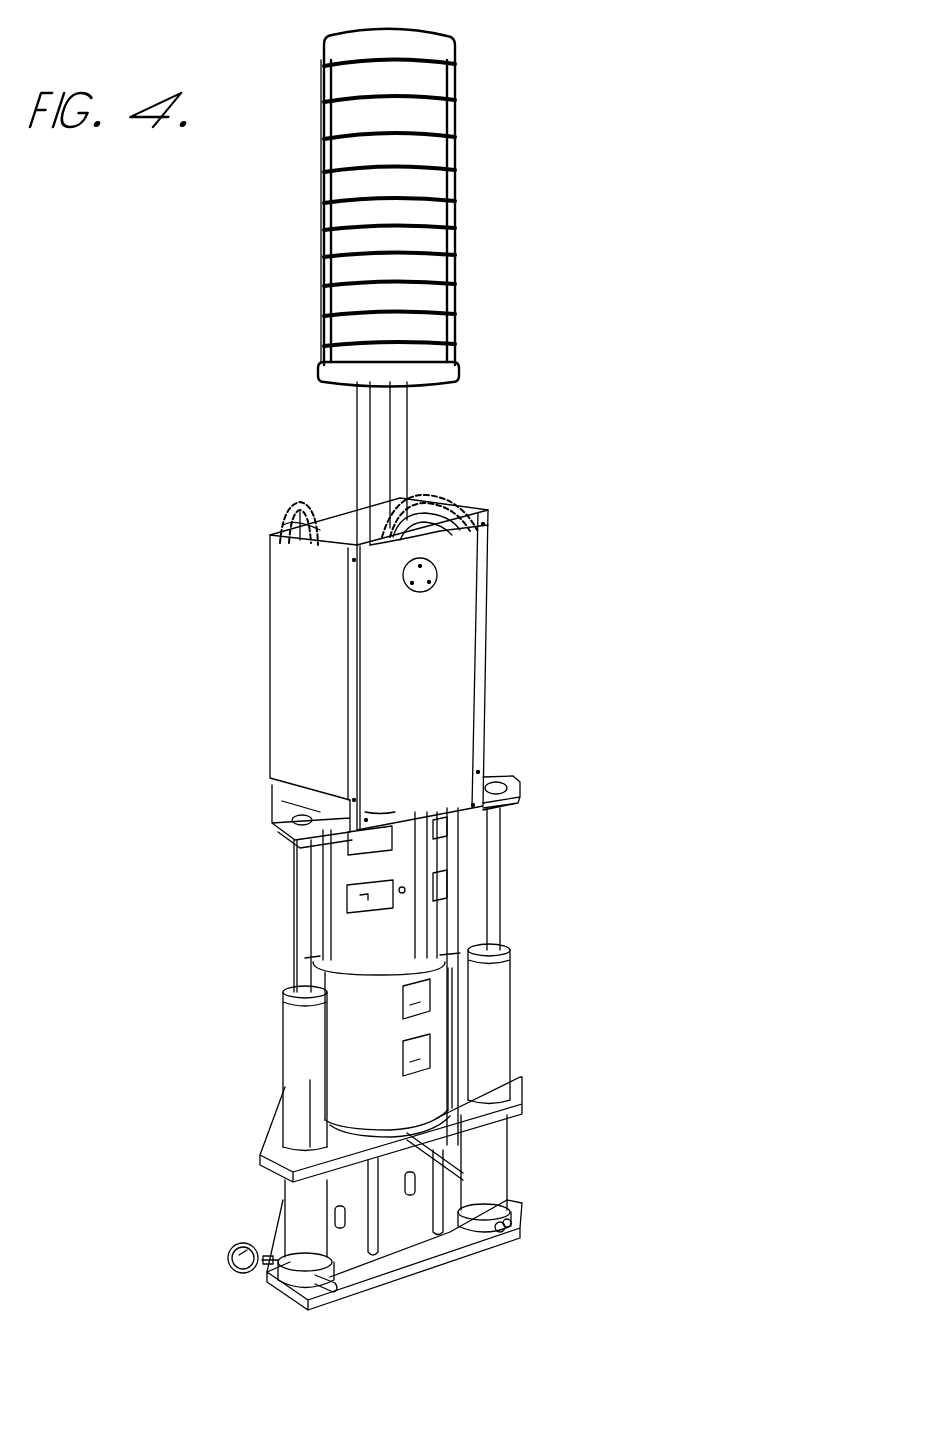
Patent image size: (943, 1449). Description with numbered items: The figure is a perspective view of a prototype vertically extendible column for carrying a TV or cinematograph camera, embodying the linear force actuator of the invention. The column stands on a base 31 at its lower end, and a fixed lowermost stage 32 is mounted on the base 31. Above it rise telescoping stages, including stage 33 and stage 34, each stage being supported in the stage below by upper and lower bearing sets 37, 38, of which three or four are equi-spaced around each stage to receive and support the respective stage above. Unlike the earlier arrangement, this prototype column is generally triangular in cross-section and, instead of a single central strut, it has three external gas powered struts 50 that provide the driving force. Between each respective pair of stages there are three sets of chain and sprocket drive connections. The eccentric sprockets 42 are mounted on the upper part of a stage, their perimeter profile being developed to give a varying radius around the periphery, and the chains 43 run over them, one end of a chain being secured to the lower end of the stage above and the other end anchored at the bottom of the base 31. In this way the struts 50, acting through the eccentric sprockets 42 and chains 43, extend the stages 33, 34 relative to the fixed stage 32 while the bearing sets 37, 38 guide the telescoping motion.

The base 31 is at (313, 1193).
The fixed lowermost stage 32 is at (321, 1044).
The telescoping stage 33 is at (447, 673).
The telescoping stage 34 is at (315, 886).
The upper bearing set 37 is at (518, 964).
The lower bearing set 38 is at (507, 1055).
The eccentric sprocket 42 is at (387, 484).
The chain 43 is at (344, 480).
The gas powered strut 50 is at (370, 1118).